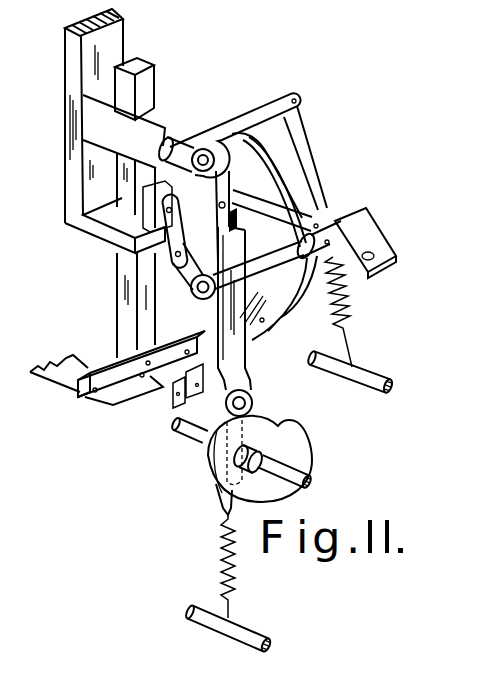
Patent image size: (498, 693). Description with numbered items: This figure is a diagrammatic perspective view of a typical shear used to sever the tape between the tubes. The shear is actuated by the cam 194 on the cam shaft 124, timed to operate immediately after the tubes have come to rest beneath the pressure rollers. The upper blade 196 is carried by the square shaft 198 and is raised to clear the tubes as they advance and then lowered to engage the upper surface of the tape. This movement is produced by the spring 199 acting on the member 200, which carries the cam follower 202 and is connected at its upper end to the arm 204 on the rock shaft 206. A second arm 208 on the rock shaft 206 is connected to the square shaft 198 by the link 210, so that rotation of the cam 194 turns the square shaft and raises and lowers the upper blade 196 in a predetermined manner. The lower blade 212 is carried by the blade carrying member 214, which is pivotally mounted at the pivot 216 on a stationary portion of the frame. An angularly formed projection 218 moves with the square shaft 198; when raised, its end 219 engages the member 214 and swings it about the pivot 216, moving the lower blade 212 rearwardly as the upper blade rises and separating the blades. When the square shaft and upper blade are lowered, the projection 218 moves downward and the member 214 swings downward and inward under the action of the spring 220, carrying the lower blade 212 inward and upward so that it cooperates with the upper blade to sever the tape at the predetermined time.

The cam shaft 124 is at (305, 452).
The cam 194 is at (286, 435).
The upper blade 196 is at (112, 390).
The square shaft 198 is at (118, 275).
The spring 199 is at (224, 550).
The member 200 is at (241, 357).
The cam follower 202 is at (262, 386).
The arm 204 is at (297, 190).
The rock shaft 206 is at (270, 285).
The arm 208 is at (198, 282).
The link 210 is at (133, 234).
The lower blade 212 is at (170, 400).
The blade carrying member 214 is at (246, 128).
The pivot 216 is at (176, 134).
The angularly formed projection 218 is at (290, 139).
The end of the angular projection 219 is at (229, 133).
The spring 220 is at (350, 294).